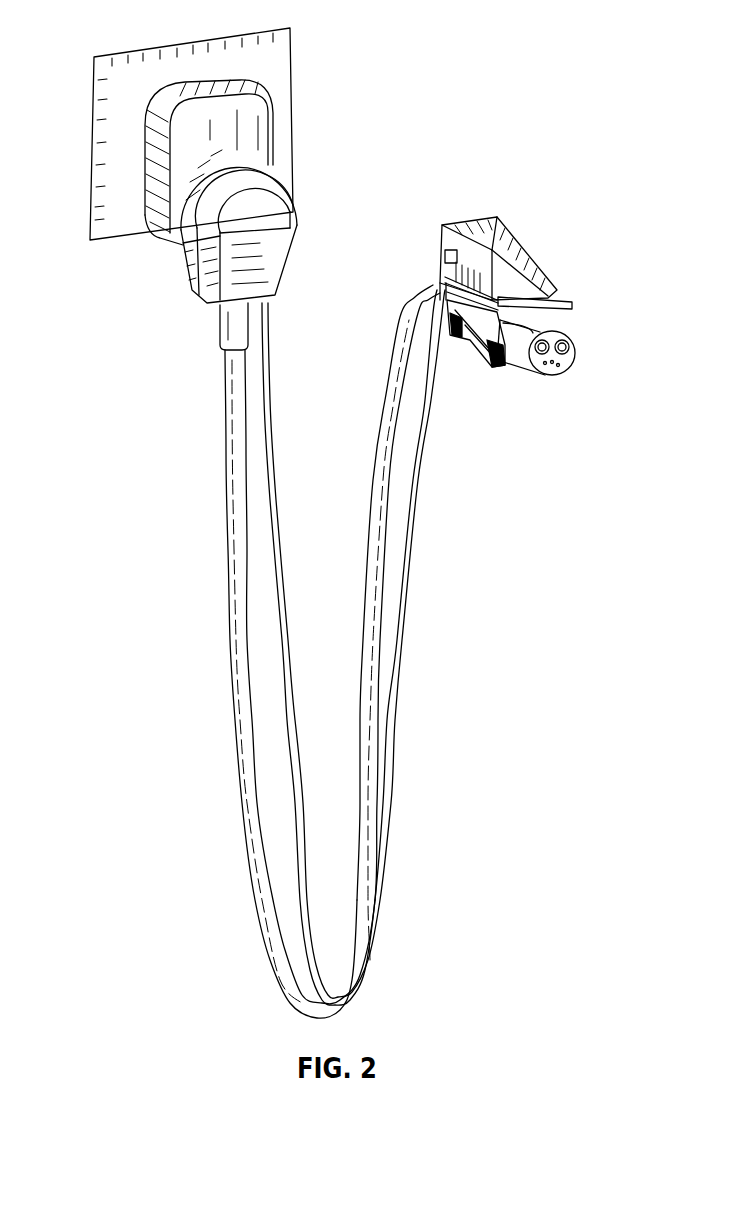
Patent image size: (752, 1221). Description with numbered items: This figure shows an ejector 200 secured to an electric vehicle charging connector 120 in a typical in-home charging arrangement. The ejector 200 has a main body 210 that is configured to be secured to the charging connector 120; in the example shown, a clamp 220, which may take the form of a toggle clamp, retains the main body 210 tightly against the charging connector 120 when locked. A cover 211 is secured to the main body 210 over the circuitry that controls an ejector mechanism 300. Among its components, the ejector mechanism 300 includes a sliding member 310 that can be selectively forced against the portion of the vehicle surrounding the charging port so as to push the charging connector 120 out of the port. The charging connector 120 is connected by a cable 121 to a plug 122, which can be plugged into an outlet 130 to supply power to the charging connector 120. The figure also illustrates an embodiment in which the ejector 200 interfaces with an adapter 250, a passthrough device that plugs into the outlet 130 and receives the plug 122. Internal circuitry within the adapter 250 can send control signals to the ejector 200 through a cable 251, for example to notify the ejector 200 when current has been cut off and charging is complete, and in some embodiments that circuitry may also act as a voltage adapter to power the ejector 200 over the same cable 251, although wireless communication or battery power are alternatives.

The charging connector 120 is at (577, 364).
The cable 121 is at (234, 757).
The plug 122 is at (188, 276).
The outlet 130 is at (240, 68).
The ejector 200 is at (516, 216).
The main body 210 is at (553, 375).
The cover 211 is at (528, 258).
The clamp 220 is at (498, 372).
The adapter 250 is at (252, 140).
The cable 251 is at (391, 793).
The ejector mechanism 300 is at (551, 299).
The sliding member 310 is at (573, 306).